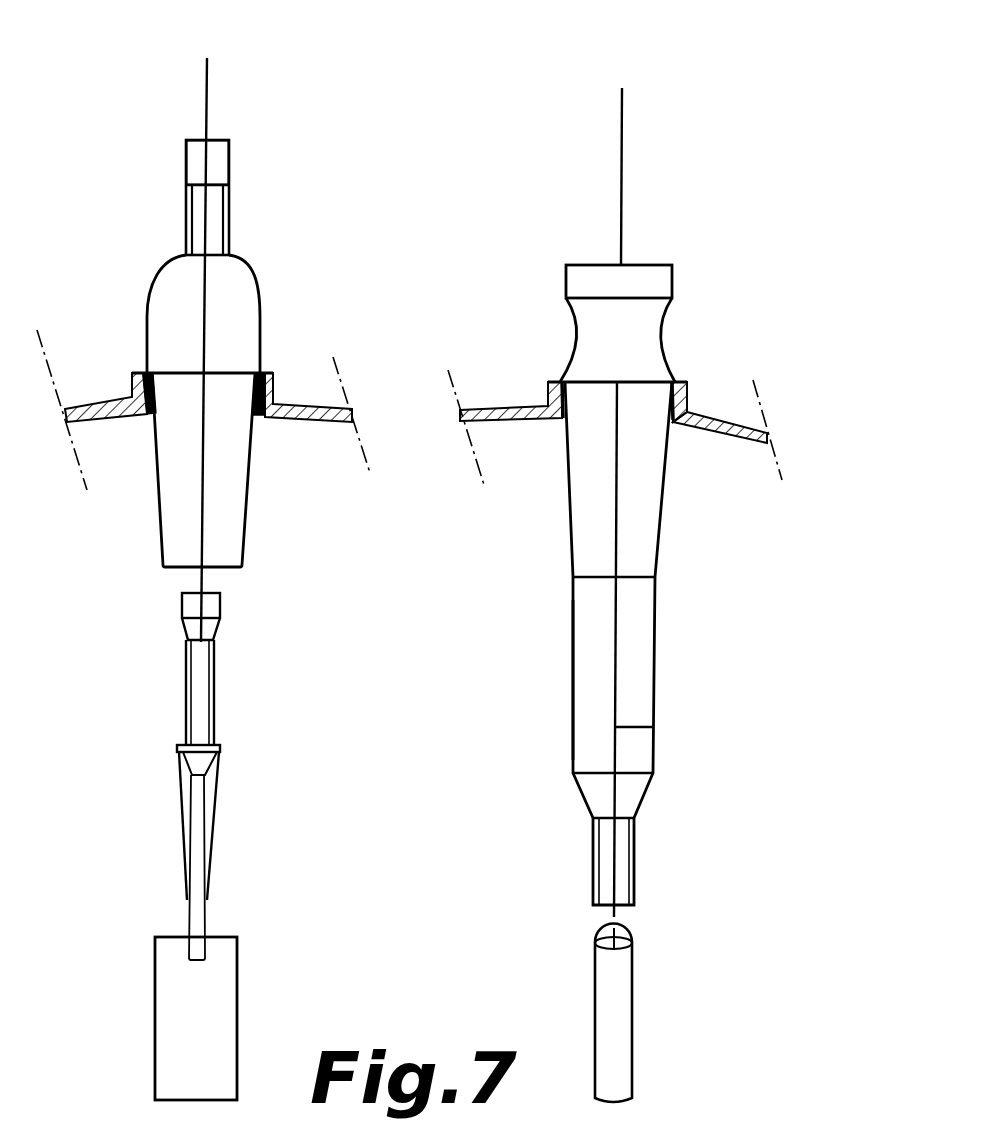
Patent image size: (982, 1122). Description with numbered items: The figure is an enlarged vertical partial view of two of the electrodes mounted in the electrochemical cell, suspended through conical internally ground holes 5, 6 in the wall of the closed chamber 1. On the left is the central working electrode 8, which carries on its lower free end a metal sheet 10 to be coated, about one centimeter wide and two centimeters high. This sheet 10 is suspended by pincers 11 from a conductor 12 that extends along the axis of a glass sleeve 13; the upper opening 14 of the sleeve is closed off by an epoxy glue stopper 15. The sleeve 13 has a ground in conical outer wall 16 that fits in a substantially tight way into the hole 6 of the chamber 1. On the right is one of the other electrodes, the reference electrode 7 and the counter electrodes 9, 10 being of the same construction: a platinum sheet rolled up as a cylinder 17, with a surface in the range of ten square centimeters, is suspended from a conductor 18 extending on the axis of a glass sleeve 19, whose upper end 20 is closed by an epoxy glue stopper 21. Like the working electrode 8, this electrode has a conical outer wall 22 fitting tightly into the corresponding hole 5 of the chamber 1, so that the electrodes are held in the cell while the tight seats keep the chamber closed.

The closed chamber 1 is at (722, 402).
The conical internally ground hole 5 is at (685, 382).
The conical internally ground hole 6 is at (131, 373).
The reference electrode 7 is at (707, 649).
The working electrode 8 is at (240, 642).
The counter electrode 9 is at (686, 572).
The metal sheet 10 is at (210, 993).
The pincers 11 is at (200, 840).
The conductor 12 is at (202, 502).
The glass sleeve 13 is at (257, 485).
The upper opening 14 is at (186, 153).
The epoxy glue stopper 15 is at (213, 162).
The ground in conical outer wall 16 is at (267, 372).
The cylinder 17 is at (625, 1017).
The conductor 18 is at (652, 727).
The glass sleeve 19 is at (569, 659).
The upper end 20 is at (658, 337).
The epoxy glue stopper 21 is at (637, 313).
The conical outer wall 22 is at (558, 382).